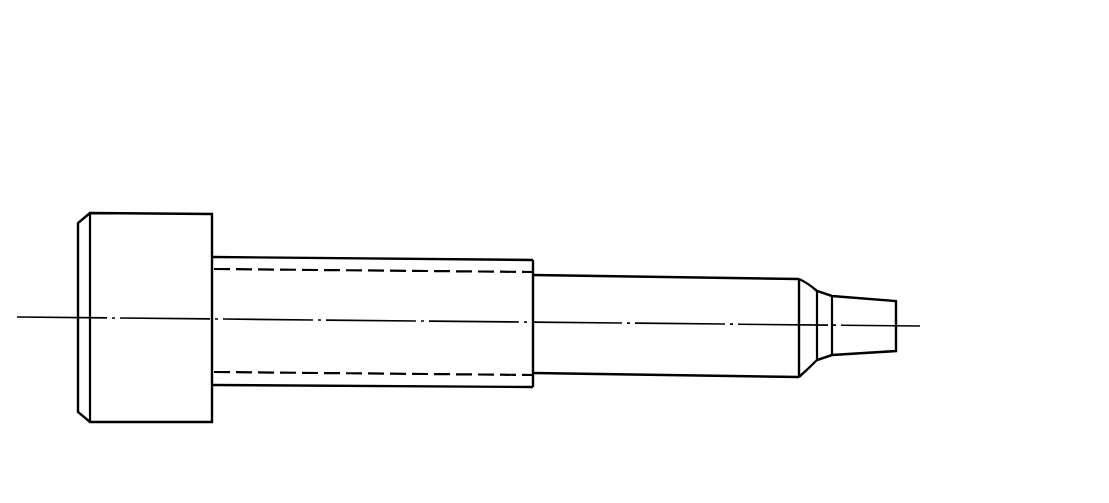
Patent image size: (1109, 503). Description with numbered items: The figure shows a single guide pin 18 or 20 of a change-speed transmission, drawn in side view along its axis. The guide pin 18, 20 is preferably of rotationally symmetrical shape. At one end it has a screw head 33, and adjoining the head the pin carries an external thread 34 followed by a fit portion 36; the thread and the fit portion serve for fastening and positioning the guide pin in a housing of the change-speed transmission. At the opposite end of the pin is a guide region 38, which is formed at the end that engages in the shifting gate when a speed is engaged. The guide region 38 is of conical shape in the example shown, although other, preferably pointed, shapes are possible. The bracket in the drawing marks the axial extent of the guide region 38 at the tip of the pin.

The guide pin 18 is at (599, 172).
The guide pin 20 is at (599, 172).
The screw head 33 is at (150, 207).
The external thread 34 is at (365, 255).
The fit portion 36 is at (675, 278).
The guide region 38 is at (896, 299).